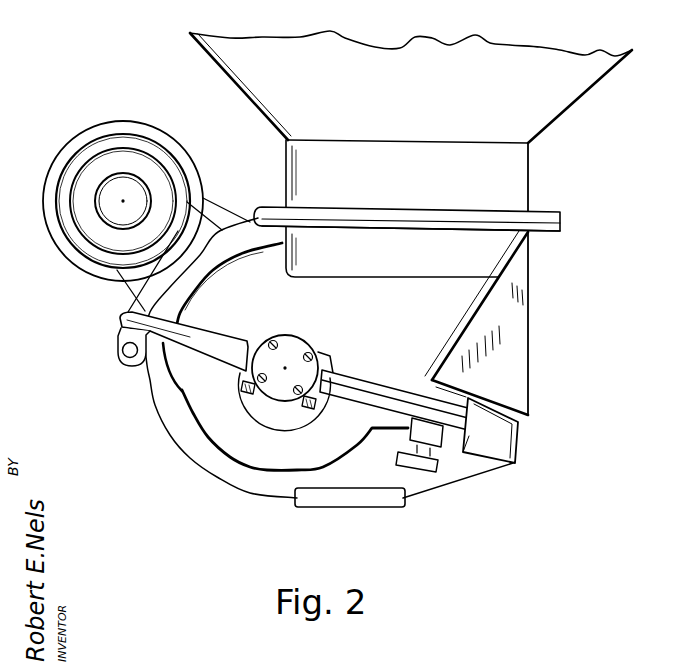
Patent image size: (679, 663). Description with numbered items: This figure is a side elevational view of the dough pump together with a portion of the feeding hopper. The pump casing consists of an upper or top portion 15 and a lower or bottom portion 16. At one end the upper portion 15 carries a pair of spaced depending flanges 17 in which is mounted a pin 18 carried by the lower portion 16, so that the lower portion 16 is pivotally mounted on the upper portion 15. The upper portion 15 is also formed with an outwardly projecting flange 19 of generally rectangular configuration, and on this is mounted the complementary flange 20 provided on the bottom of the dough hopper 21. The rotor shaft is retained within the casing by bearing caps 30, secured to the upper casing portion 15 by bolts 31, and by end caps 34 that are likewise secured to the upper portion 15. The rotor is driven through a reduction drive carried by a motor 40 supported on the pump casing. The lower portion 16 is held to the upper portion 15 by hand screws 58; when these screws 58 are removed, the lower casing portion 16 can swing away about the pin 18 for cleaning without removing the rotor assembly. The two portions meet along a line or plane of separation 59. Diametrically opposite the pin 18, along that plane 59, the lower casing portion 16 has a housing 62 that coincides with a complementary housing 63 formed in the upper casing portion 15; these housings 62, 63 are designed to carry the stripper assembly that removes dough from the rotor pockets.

The upper portion of the pump casing 15 is at (515, 318).
The lower portion of the pump casing 16 is at (255, 457).
The depending flanges 17 is at (118, 340).
The pin 18 is at (129, 358).
The outwardly projecting flange 19 is at (555, 232).
The flange of the dough hopper 20 is at (540, 212).
The dough hopper 21 is at (558, 97).
The bearing caps 30 is at (318, 400).
The bolts 31 is at (250, 394).
The end caps 34 is at (290, 355).
The motor 40 is at (97, 235).
The hand screws 58 is at (433, 471).
The plane of separation 59 is at (363, 387).
The housing 62 is at (517, 460).
The complementary housing 63 is at (527, 419).